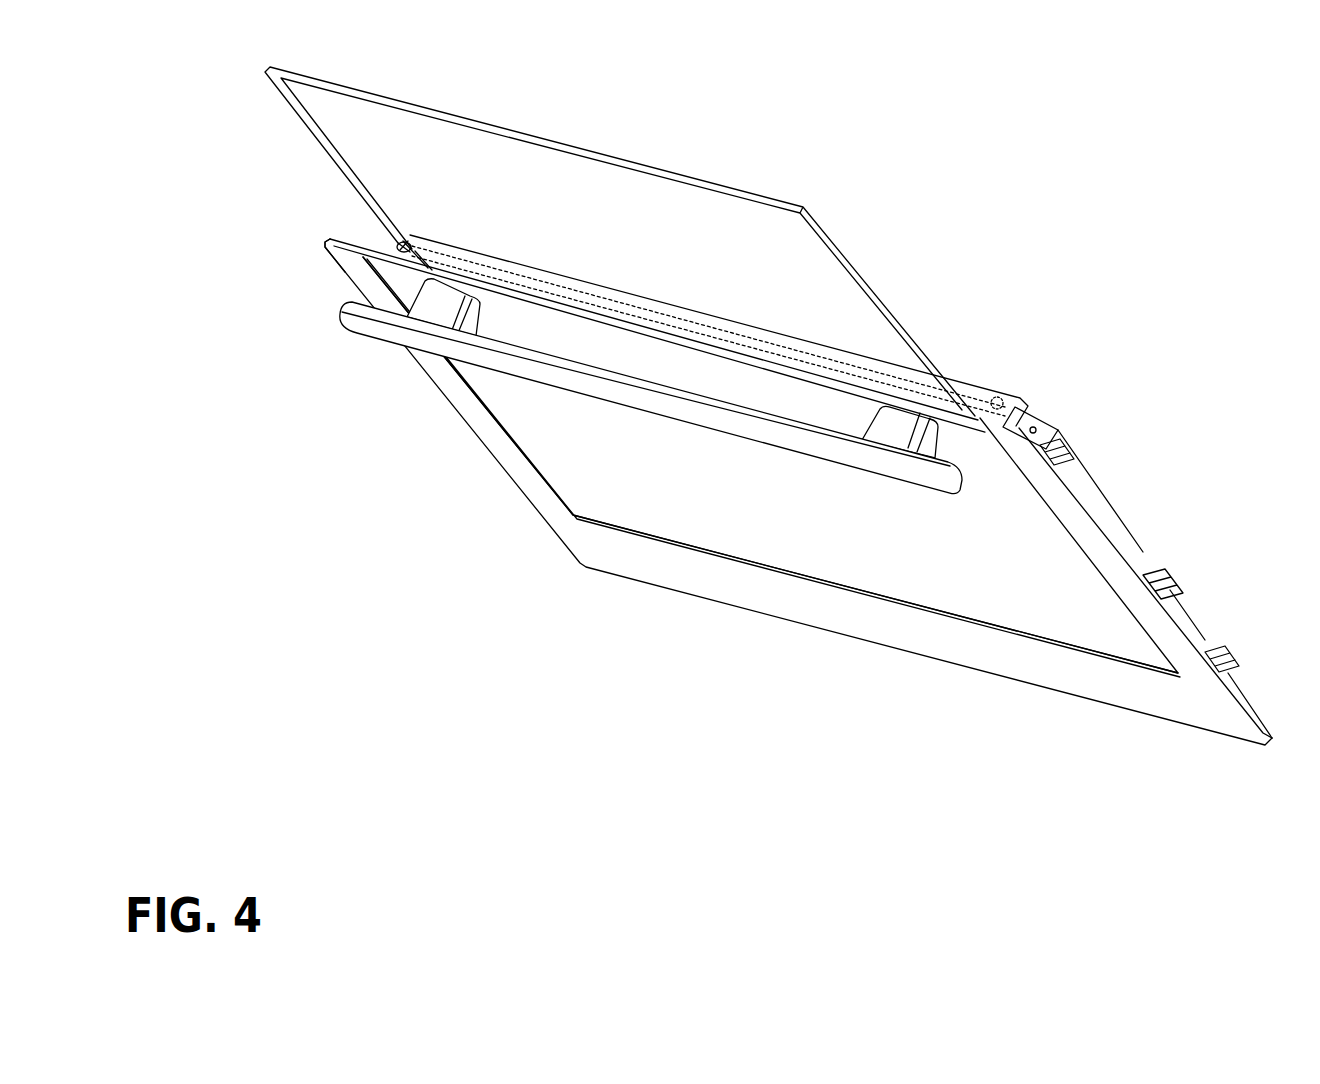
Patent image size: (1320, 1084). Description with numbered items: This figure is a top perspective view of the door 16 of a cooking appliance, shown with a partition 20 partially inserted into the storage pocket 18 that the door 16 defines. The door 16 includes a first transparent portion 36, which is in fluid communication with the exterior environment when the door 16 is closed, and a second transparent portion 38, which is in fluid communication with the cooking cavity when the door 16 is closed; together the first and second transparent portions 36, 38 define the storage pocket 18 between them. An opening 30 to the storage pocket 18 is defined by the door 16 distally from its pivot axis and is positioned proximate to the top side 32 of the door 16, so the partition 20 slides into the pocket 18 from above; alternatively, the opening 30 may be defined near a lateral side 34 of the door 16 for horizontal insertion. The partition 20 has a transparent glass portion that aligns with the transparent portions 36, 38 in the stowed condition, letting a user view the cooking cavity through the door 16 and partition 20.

The door 16 is at (1122, 523).
The storage pocket 18 is at (988, 391).
The partition 20 is at (728, 219).
The opening 30 is at (404, 245).
The top side 32 is at (330, 234).
The lateral side 34 is at (1133, 567).
The first transparent portion 36 is at (810, 537).
The second transparent portion 38 is at (971, 385).